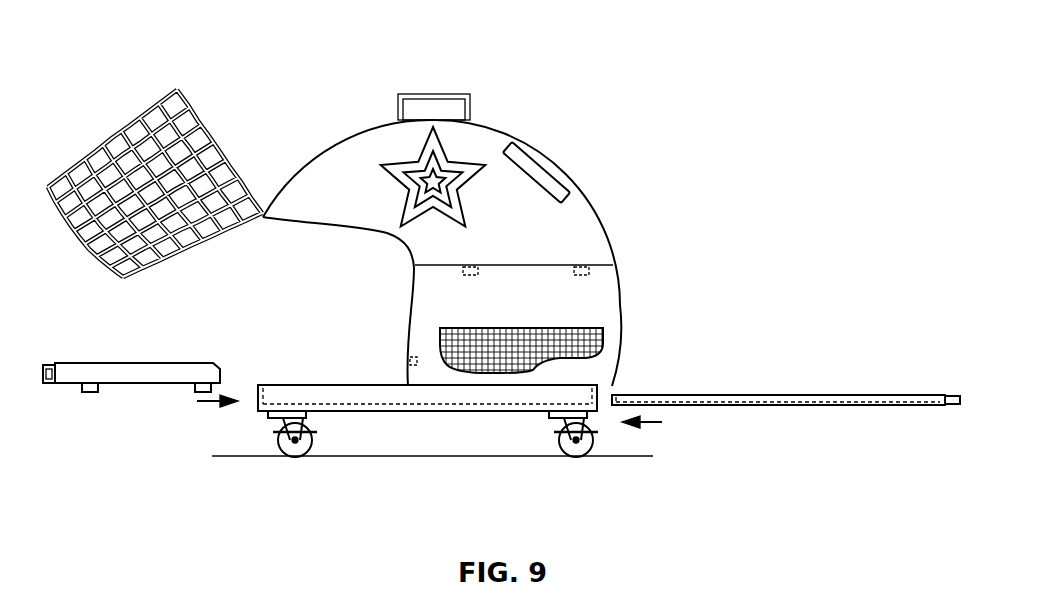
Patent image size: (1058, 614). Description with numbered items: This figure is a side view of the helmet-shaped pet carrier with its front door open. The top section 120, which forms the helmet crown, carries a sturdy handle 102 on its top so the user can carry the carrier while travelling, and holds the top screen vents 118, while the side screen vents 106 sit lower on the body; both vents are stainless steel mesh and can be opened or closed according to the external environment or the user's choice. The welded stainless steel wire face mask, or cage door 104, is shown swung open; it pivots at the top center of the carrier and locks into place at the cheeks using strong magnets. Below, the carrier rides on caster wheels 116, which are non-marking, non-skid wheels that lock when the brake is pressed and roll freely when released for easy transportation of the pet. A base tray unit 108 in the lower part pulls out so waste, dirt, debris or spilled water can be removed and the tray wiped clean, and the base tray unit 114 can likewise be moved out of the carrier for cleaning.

The handle 102 is at (428, 94).
The face mask/cage door 104 is at (177, 90).
The side screen vents 106 is at (587, 338).
The base tray unit 108 is at (118, 372).
The base tray unit 114 is at (767, 407).
The caster wheel 116 is at (572, 455).
The top screen vents 118 is at (558, 178).
The top section 120 is at (572, 243).